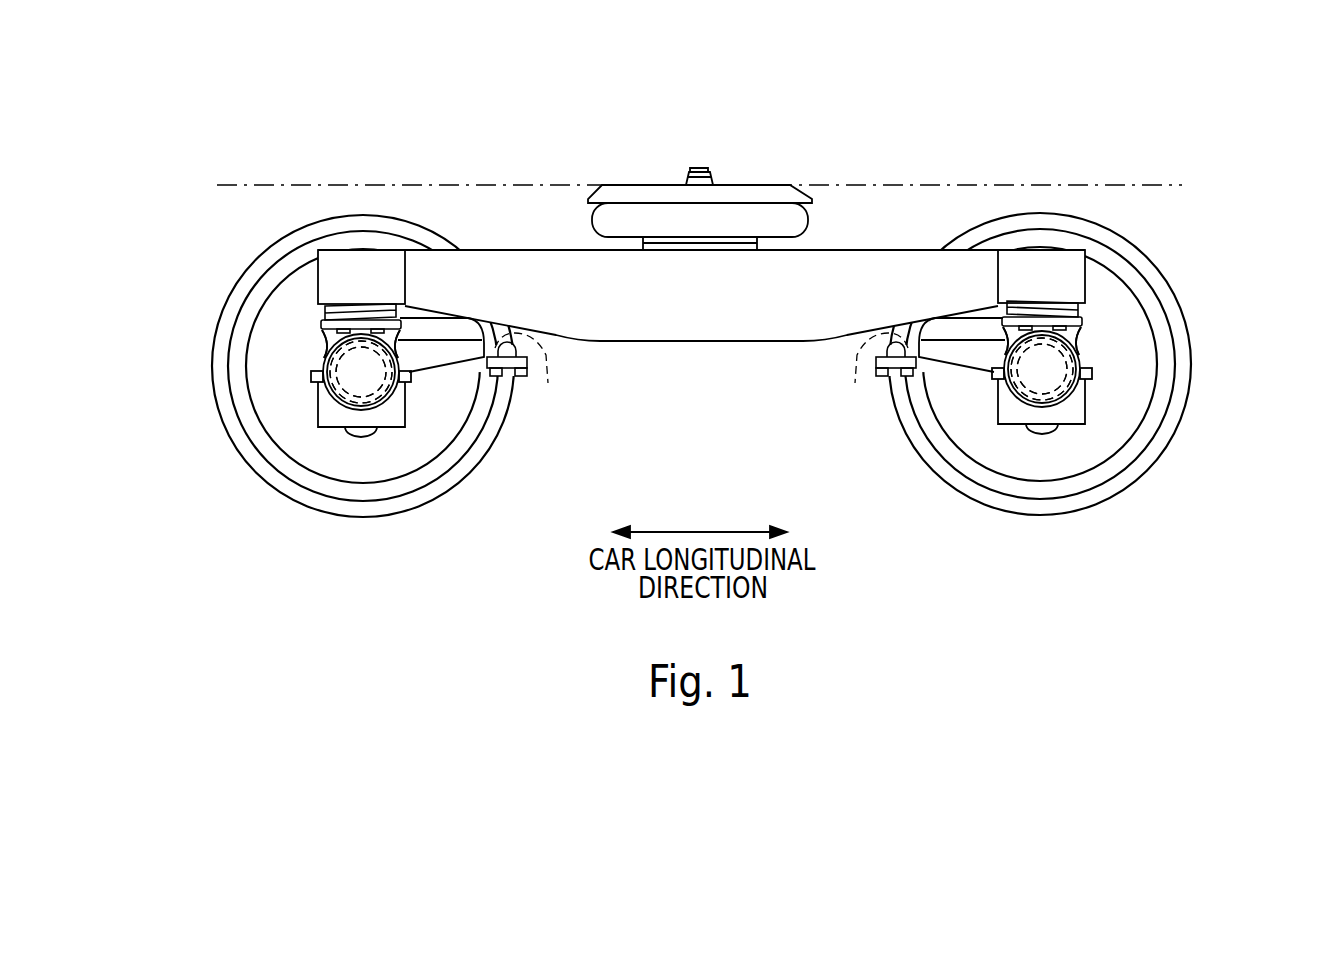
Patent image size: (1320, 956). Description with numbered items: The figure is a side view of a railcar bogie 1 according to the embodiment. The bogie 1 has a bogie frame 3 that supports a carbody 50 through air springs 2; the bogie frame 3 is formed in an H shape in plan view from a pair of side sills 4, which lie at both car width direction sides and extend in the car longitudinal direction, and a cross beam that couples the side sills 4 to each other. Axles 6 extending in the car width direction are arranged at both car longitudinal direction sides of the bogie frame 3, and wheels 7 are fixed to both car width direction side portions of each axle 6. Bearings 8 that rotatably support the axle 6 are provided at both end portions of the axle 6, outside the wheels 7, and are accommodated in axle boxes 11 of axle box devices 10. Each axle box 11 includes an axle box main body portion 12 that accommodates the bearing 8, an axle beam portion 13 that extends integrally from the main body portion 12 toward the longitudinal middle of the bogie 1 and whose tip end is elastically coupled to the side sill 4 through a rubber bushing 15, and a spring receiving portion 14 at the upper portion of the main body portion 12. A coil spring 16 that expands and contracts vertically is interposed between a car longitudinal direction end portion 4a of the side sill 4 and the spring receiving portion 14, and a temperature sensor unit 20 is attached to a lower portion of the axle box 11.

The railcar bogie 1 is at (294, 141).
The air spring 2 is at (775, 192).
The bogie frame 3 is at (702, 344).
The side sill 4 is at (701, 272).
The car longitudinal direction end portion of the side sill 4a is at (362, 250).
The carbody 50 is at (1145, 182).
The axle 6 is at (318, 393).
The wheel 7 is at (259, 260).
The bearing 8 is at (389, 396).
The axle box device 10 is at (293, 375).
The axle box 11 is at (313, 383).
The axle box main body portion 12 is at (320, 353).
The axle beam portion 13 is at (443, 373).
The spring receiving portion 14 is at (320, 316).
The rubber bushing 15 is at (548, 383).
The coil spring 16 is at (318, 312).
The temperature sensor unit 20 is at (360, 438).